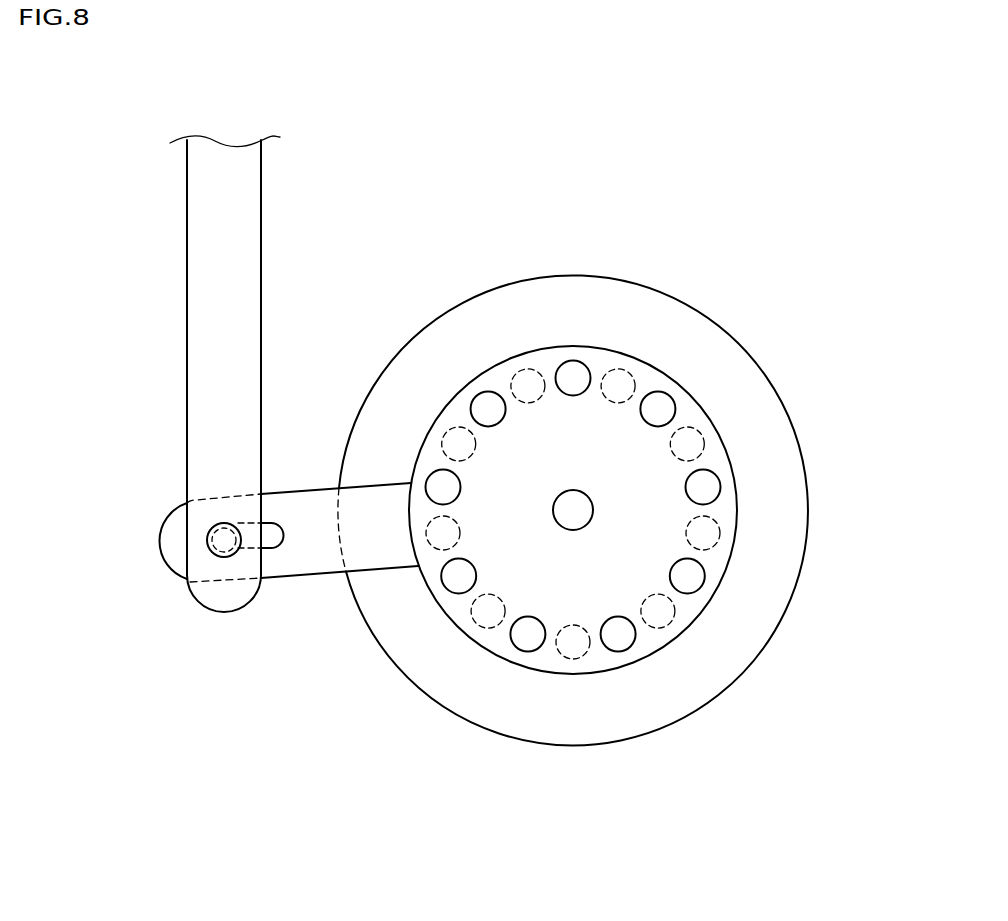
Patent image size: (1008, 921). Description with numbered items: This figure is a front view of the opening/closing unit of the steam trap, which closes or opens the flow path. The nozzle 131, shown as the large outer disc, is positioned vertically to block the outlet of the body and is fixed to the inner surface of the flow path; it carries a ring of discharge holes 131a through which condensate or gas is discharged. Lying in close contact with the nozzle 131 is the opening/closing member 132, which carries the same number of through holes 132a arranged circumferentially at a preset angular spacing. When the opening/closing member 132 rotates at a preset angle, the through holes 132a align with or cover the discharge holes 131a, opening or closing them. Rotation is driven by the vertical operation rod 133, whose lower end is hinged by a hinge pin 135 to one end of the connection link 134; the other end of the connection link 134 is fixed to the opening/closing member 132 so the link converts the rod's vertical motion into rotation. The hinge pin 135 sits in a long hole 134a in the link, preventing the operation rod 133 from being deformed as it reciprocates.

The nozzle 131 is at (790, 605).
The discharge hole 131a is at (668, 625).
The opening/closing member 132 is at (573, 674).
The through hole 132a is at (512, 645).
The operation rod 133 is at (261, 201).
The connection link 134 is at (307, 568).
The long hole 134a is at (280, 524).
The hinge pin 135 is at (207, 532).